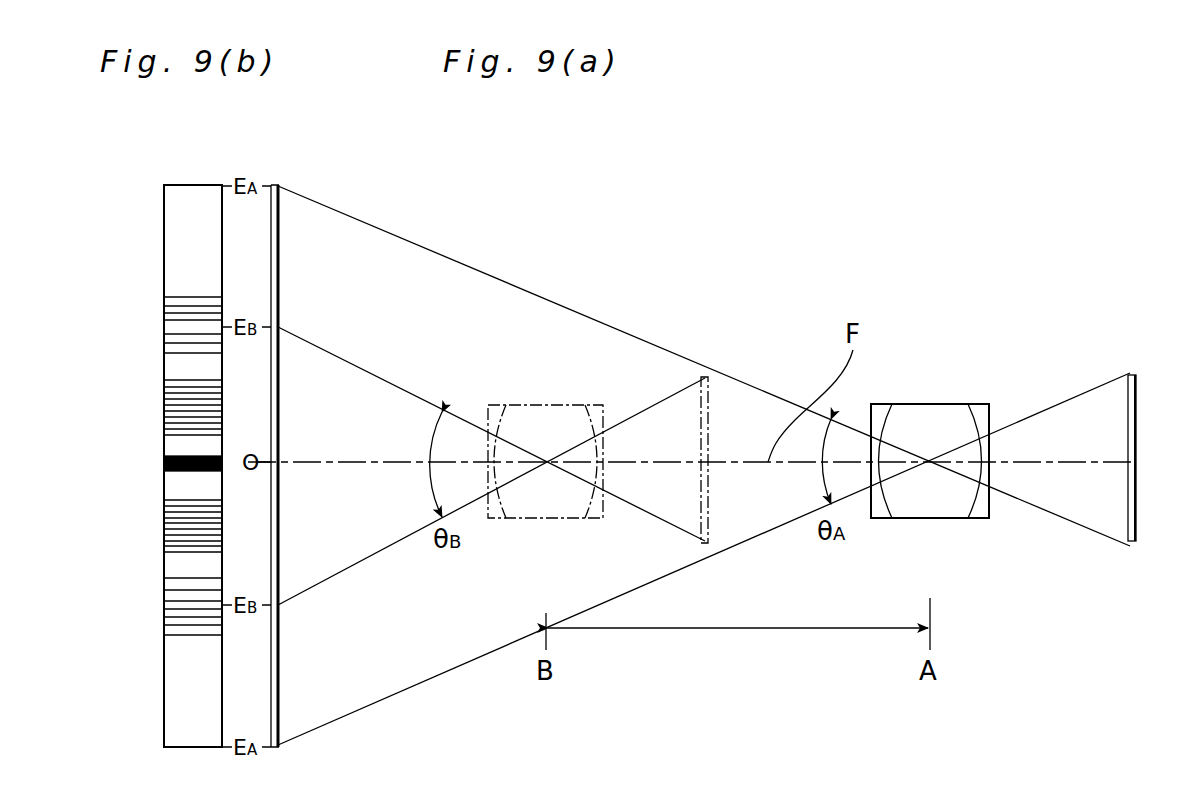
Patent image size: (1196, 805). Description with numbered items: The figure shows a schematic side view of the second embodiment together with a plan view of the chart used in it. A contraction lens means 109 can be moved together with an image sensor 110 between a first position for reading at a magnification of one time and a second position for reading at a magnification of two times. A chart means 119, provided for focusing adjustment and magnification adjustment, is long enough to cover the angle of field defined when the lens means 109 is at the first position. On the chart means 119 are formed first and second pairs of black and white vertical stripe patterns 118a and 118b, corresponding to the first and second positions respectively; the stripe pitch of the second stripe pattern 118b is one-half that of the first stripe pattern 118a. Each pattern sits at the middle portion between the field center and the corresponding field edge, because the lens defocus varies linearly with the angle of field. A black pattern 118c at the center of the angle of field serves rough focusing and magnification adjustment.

In FIG. 9b, the chart means 119 is at (199, 185).
The chart means 119 is at (278, 185).
In FIG. 9b, the first pair of black and white vertical stripe patterns 118a is at (136, 379).
In FIG. 9b, the second pair of black and white vertical stripe patterns 118b is at (222, 327).
In FIG. 9b, the black pattern 118c is at (190, 468).
The contraction lens means 109 is at (553, 405).
The image sensor 110 is at (708, 390).